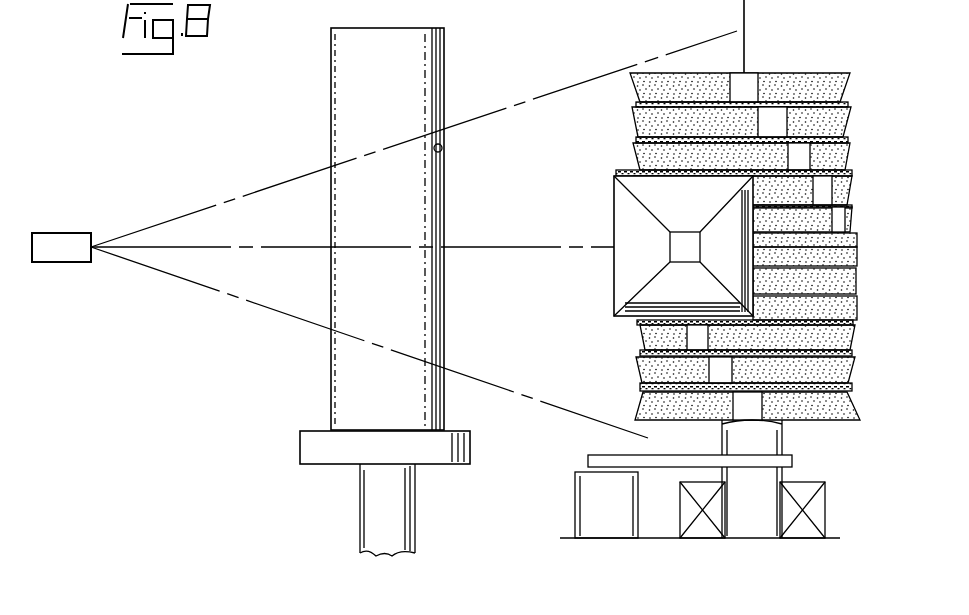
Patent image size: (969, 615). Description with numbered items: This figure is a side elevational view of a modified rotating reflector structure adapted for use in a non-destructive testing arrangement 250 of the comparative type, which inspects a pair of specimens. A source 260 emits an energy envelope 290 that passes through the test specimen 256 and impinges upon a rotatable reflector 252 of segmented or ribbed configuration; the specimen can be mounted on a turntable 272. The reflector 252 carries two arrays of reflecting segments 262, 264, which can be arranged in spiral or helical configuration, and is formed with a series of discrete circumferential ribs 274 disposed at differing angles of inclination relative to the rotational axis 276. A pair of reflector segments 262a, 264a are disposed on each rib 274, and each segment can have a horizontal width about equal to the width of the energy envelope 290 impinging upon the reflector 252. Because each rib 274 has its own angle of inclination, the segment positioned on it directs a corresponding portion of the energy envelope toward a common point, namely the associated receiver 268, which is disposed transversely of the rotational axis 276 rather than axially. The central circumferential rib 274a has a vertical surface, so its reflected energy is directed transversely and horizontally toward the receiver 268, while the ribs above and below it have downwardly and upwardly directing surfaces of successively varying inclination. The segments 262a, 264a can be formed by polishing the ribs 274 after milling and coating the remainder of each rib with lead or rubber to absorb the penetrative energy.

The non-destructive testing arrangement 250 is at (577, 55).
The rotatable reflector 252 is at (736, 237).
The test specimen 256 is at (440, 345).
The source 260 is at (50, 236).
The array of reflecting segments 262 is at (826, 122).
The reflector segment 262a is at (822, 178).
The array of reflecting segments 264 is at (648, 370).
The reflector segment 264a is at (743, 405).
The receiver 268 is at (622, 275).
The turntable 272 is at (430, 456).
The circumferential ribs 274 is at (734, 125).
The central circumferential rib 274a is at (837, 248).
The rotational axis 276 is at (745, 42).
The energy envelope 290 is at (241, 197).